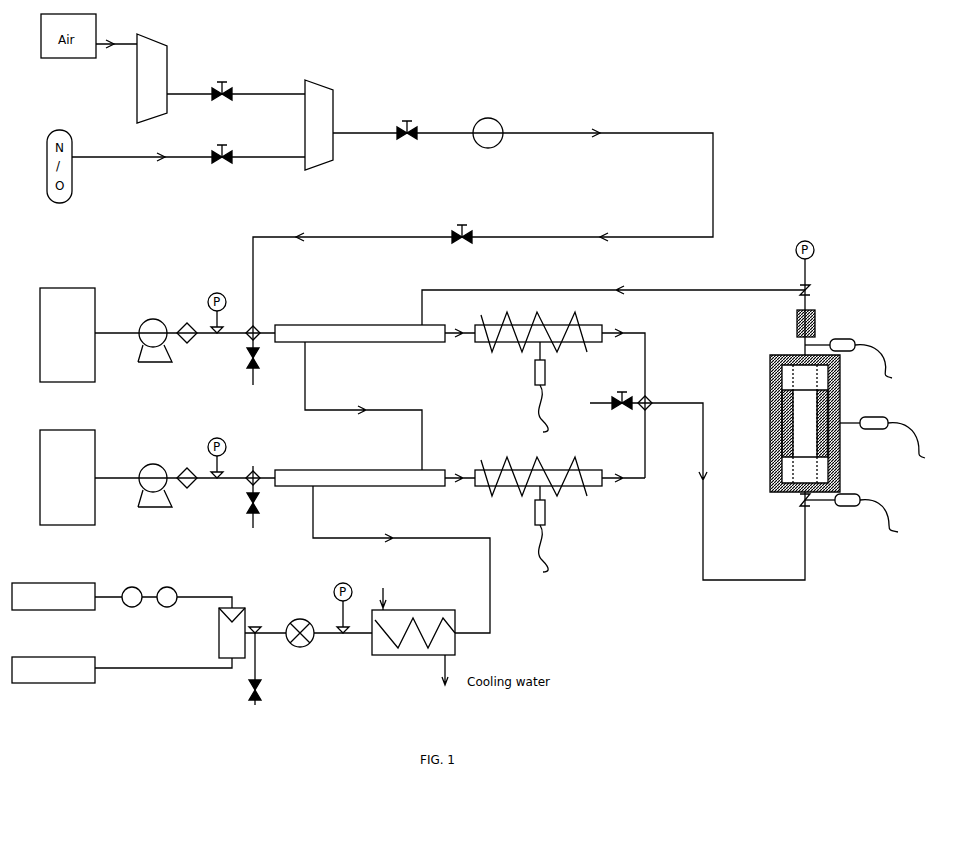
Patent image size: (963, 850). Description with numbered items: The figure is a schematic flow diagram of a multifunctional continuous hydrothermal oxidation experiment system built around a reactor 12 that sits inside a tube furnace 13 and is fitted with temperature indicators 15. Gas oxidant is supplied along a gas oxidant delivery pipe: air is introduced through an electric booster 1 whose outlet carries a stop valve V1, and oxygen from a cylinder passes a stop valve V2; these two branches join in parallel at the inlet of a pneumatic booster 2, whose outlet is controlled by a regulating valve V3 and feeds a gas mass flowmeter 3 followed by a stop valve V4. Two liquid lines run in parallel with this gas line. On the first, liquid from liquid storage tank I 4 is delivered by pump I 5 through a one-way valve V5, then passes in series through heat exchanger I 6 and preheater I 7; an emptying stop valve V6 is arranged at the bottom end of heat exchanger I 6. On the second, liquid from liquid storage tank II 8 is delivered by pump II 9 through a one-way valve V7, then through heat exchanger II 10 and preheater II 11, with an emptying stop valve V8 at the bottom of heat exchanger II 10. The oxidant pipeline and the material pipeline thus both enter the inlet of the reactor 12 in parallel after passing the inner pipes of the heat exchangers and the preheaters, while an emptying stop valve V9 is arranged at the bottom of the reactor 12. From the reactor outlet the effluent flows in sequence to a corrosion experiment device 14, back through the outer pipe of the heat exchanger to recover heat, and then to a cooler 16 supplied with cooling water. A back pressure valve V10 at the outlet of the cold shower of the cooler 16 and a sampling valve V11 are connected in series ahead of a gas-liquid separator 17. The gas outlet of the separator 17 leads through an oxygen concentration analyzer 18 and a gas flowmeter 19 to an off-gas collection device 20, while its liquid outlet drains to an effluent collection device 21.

The electric booster 1 is at (152, 78).
The pneumatic booster 2 is at (319, 125).
The gas mass flowmeter 3 is at (495, 120).
The liquid storage tank I 4 is at (67, 335).
The pump I 5 is at (160, 320).
The heat exchanger I 6 is at (325, 338).
The preheater I 7 is at (505, 338).
The liquid storage tank II 8 is at (67, 477).
The pump II 9 is at (160, 465).
The heat exchanger II 10 is at (325, 482).
The preheater II 11 is at (508, 481).
The reactor 12 is at (820, 423).
The tube furnace 13 is at (840, 450).
The corrosion experiment device 14 is at (818, 303).
The temperature indicators 15 is at (850, 333).
The cooler 16 is at (405, 620).
The gas-liquid separator 17 is at (232, 633).
The oxygen concentration analyzer 18 is at (172, 588).
The gas flowmeter 19 is at (137, 588).
The off-gas collection device 20 is at (53, 596).
The effluent collection device 21 is at (53, 670).
The stop valve V1 is at (222, 83).
The stop valve V2 is at (222, 146).
The regulating valve V3 is at (407, 121).
The stop valve V4 is at (462, 224).
The one-way valve V5 is at (187, 342).
The emptying stop valve V6 is at (262, 358).
The one-way valve V7 is at (187, 487).
The emptying stop valve V8 is at (262, 503).
The emptying stop valve V9 is at (622, 409).
The back pressure valve V10 is at (304, 641).
The sampling valve V11 is at (242, 690).